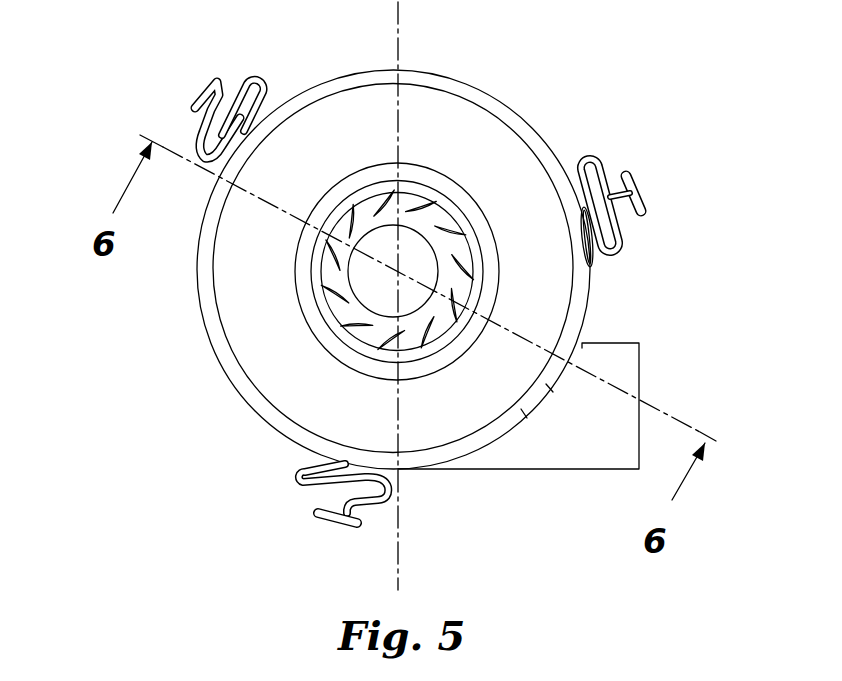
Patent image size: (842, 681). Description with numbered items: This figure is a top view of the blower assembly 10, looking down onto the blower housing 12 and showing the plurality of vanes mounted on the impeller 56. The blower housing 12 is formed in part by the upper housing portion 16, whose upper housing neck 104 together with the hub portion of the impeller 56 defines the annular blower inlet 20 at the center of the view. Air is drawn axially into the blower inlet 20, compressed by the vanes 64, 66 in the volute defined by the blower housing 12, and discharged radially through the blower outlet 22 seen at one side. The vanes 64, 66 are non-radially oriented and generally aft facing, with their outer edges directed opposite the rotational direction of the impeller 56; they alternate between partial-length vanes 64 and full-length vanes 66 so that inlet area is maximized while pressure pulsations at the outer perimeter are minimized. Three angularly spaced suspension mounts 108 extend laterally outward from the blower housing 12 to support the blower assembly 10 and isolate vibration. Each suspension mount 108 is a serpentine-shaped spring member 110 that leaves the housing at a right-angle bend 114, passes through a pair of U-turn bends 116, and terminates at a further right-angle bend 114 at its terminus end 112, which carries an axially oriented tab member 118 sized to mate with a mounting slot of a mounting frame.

The blower assembly 10 is at (597, 58).
The blower housing 12 is at (251, 412).
The upper housing portion 16 is at (487, 398).
The blower inlet 20 is at (445, 221).
The blower outlet 22 is at (641, 366).
The impeller 56 is at (410, 250).
The partial-length vanes 64 is at (282, 276).
The full-length vanes 66 is at (385, 375).
The upper housing neck 104 is at (345, 355).
The suspension mount 108 is at (394, 297).
The spring member 110 is at (262, 80).
The terminus end 112 is at (206, 88).
The 90° bend 114 is at (640, 222).
The 180° bends 116 is at (588, 158).
The tab member 118 is at (645, 190).